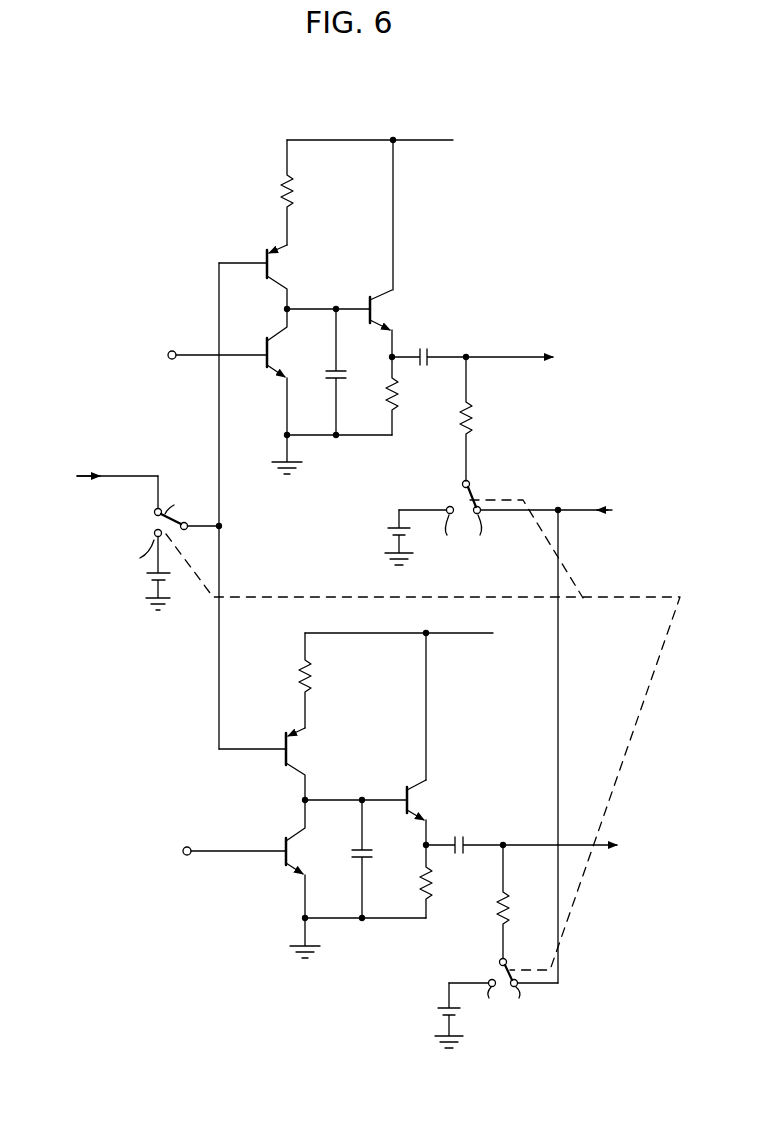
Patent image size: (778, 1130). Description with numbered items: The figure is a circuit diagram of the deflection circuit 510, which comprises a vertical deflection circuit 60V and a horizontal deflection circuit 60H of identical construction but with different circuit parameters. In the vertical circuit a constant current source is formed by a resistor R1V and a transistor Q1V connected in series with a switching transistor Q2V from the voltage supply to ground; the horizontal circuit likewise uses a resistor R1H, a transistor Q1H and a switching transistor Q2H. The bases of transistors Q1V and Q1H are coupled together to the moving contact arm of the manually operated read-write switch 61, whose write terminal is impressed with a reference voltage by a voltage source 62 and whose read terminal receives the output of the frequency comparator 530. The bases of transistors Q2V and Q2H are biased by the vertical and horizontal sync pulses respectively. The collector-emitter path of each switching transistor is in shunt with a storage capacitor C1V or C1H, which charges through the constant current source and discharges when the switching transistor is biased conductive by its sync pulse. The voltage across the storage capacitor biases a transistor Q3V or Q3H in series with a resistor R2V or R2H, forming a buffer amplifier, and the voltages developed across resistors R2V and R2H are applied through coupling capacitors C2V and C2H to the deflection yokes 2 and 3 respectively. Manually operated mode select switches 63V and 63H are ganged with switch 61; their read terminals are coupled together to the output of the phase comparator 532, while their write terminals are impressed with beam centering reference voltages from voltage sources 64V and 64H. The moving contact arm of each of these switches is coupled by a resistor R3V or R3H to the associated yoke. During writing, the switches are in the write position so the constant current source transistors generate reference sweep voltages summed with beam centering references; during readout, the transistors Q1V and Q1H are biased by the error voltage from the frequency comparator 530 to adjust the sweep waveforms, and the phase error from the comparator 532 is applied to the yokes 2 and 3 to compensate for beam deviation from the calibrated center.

The deflection circuit 510 is at (362, 114).
The vertical deflection circuit 60V is at (200, 224).
The horizontal deflection circuit 60H is at (177, 799).
The resistor R1V is at (296, 192).
The transistor Q1V is at (283, 265).
The switching transistor Q2V is at (265, 368).
The transistor Q3V is at (388, 308).
The storage capacitor C1V is at (334, 370).
The coupling capacitor C2V is at (428, 352).
The resistor R2V is at (386, 392).
The resistor R3V is at (470, 414).
The mode select switch 63V is at (462, 488).
The voltage source 64V is at (396, 532).
The switch 61 is at (150, 518).
The voltage source 62 is at (150, 586).
The frequency comparator 530 is at (96, 437).
The phase comparator 532 is at (611, 552).
The deflection yoke 2 is at (566, 369).
The deflection yoke 3 is at (612, 861).
The resistor R1H is at (310, 676).
The transistor Q1H is at (292, 756).
The switching transistor Q2H is at (290, 856).
The transistor Q3H is at (425, 800).
The storage capacitor C1H is at (367, 850).
The coupling capacitor C2H is at (460, 836).
The resistor R2H is at (420, 878).
The resistor R3H is at (498, 905).
The mode select switch 63H is at (500, 965).
The voltage source 64H is at (446, 1012).